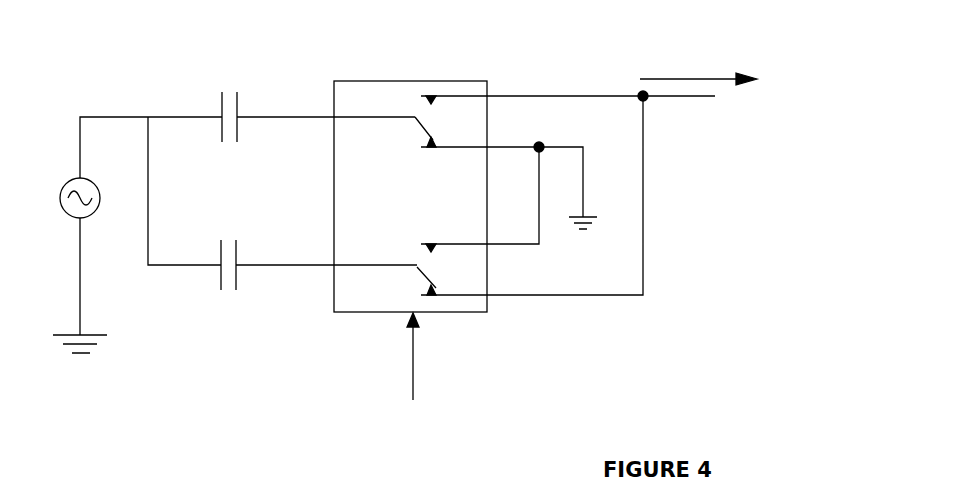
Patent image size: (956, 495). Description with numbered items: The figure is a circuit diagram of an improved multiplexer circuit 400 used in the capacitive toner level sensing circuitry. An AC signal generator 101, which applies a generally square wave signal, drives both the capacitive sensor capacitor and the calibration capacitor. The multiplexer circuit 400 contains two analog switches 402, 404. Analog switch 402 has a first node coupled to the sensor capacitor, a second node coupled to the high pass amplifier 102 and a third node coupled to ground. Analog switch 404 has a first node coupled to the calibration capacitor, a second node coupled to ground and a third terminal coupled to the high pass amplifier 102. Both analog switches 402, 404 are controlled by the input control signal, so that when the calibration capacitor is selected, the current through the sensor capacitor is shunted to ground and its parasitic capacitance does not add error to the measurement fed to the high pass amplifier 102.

The AC signal generator 101 is at (59, 162).
The high-pass amplifier 102 is at (696, 56).
The multiplexer circuit 400 is at (418, 230).
The analog switch 402 is at (417, 137).
The analog switch 404 is at (419, 232).